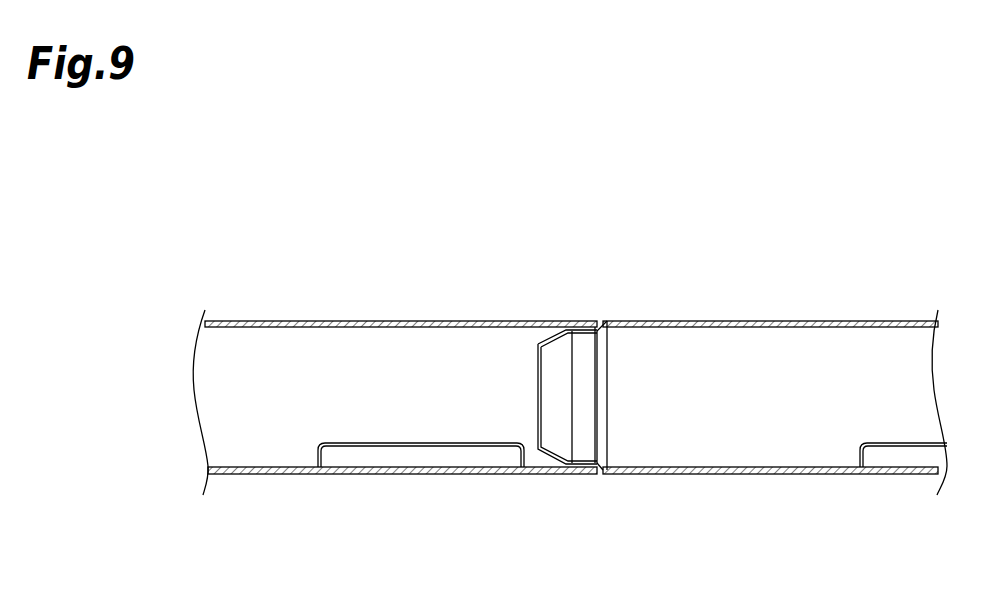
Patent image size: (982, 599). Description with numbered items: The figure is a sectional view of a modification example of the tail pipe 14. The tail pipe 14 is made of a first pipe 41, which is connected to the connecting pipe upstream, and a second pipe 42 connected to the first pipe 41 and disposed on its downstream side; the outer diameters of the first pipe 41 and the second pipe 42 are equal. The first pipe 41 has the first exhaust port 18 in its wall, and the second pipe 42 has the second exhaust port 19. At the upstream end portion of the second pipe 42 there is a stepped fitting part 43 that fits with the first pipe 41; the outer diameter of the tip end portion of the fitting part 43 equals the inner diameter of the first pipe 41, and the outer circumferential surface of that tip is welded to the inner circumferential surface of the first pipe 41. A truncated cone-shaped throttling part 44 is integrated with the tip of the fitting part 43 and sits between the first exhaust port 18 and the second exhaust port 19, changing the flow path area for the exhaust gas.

The tail pipe 14 is at (456, 234).
The first pipe 41 is at (363, 321).
The second pipe 42 is at (770, 321).
The fitting part 43 is at (583, 345).
The throttling part 44 is at (540, 380).
The first exhaust port 18 is at (418, 455).
The second exhaust port 19 is at (893, 455).